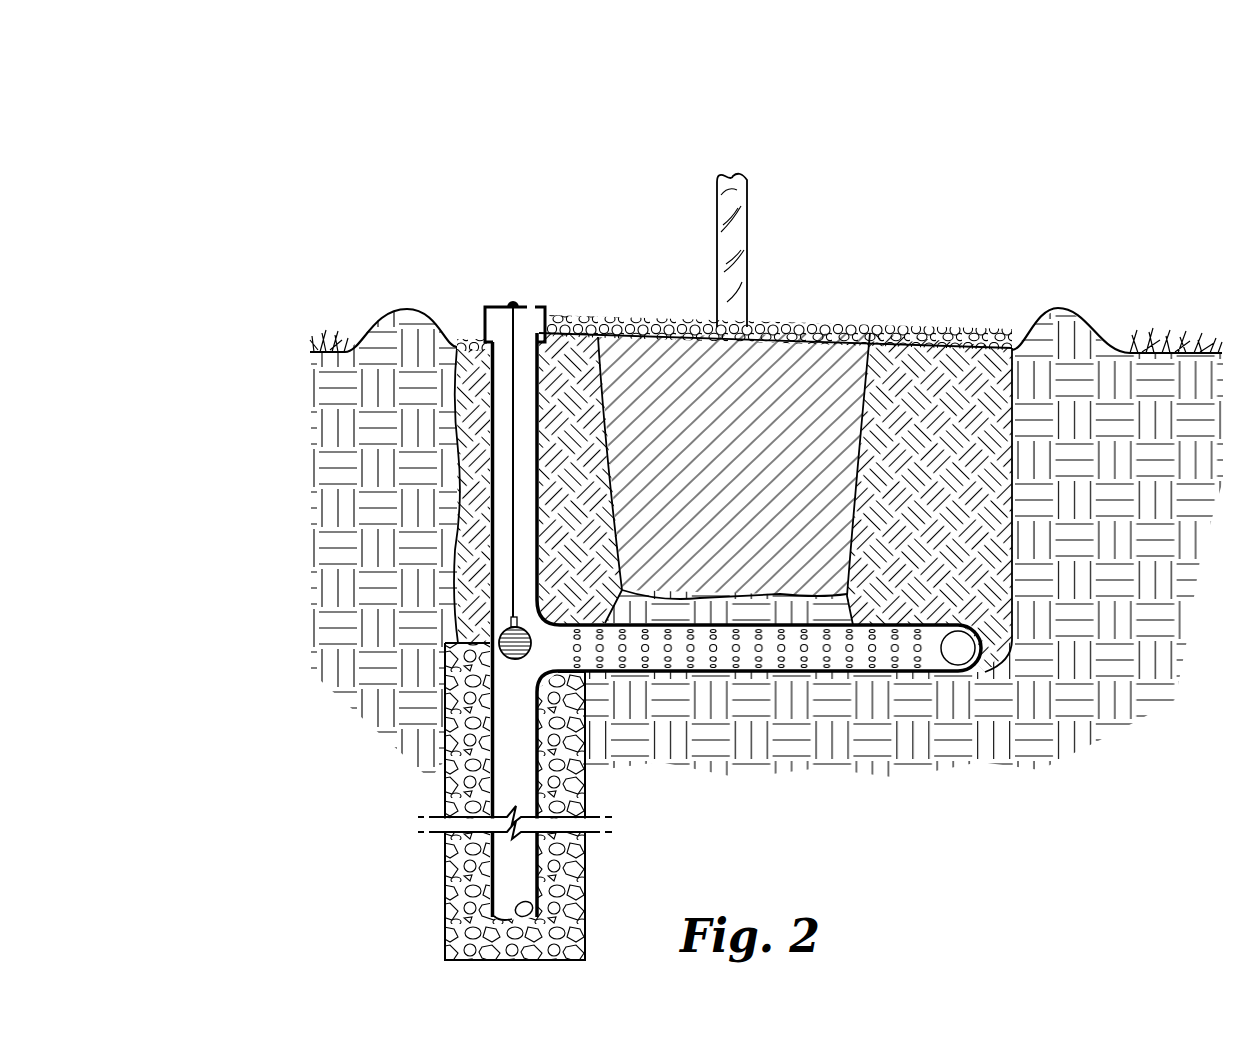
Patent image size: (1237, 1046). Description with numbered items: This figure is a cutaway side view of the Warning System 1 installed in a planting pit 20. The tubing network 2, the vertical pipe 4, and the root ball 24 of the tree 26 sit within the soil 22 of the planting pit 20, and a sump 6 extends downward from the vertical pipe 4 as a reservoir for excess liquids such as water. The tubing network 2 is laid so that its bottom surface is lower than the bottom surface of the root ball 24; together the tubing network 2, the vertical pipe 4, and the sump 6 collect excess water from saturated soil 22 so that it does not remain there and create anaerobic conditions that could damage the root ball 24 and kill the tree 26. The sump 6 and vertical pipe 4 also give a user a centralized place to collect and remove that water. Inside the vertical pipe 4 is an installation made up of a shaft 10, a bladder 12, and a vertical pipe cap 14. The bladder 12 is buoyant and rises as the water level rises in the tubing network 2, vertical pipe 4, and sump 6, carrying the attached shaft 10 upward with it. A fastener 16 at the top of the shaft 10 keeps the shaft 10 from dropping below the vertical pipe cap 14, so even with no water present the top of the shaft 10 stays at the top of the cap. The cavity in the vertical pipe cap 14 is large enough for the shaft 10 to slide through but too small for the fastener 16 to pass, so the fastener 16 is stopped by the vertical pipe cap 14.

The Warning System 1 is at (338, 282).
The tubing network 2 is at (867, 672).
The vertical pipe 4 is at (492, 483).
The sump 6 is at (445, 882).
The shaft 10 is at (515, 568).
The bladder 12 is at (458, 642).
The vertical pipe cap 14 is at (528, 332).
The fastener 16 is at (513, 302).
The planting pit 20 is at (983, 332).
The soil 22 is at (918, 417).
The root ball 24 is at (826, 378).
The tree 26 is at (747, 212).